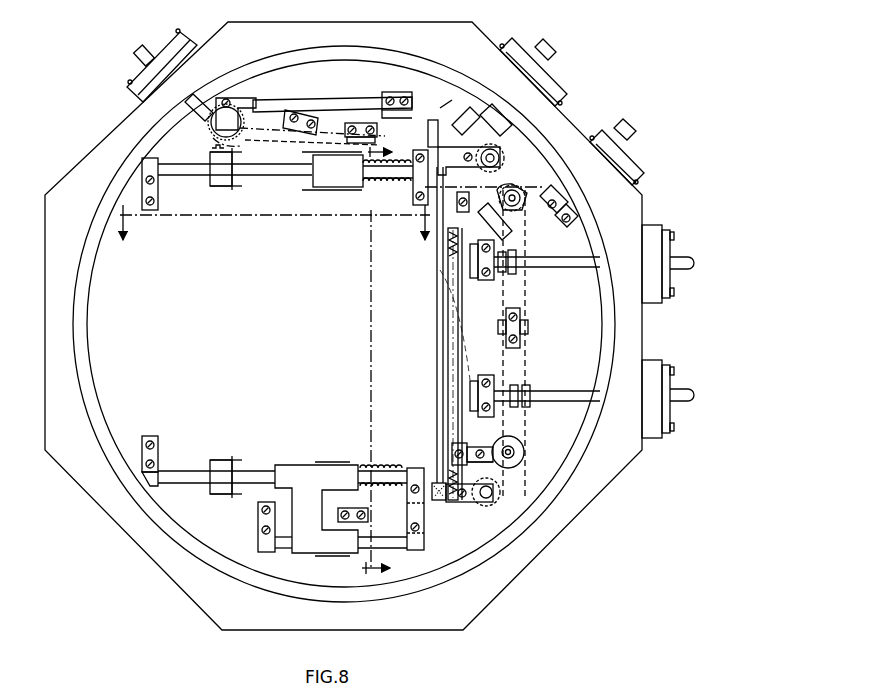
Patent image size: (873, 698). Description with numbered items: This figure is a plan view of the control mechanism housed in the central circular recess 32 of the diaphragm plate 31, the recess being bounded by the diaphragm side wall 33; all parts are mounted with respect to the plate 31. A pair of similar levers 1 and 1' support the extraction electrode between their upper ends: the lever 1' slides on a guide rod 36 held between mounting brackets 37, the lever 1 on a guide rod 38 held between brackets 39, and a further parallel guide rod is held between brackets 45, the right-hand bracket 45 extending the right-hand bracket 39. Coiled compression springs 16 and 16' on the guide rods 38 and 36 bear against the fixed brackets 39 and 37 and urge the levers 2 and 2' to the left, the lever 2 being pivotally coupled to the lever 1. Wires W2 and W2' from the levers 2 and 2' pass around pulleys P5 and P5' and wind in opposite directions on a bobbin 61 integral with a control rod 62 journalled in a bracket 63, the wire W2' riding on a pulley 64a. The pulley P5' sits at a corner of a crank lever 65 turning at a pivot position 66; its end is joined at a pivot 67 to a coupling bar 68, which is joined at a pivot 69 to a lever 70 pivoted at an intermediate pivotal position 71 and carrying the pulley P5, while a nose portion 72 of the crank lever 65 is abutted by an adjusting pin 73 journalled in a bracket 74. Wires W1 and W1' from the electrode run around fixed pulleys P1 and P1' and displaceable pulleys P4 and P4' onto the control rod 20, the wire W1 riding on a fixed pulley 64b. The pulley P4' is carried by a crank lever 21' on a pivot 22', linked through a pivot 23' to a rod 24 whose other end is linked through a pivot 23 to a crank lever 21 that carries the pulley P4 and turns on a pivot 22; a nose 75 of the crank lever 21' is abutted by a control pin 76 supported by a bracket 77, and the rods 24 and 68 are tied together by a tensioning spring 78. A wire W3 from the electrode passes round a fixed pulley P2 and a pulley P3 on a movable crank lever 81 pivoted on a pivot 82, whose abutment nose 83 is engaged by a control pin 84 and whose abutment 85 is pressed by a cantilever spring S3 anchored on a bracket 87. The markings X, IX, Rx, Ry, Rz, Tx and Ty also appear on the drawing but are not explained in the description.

The diaphragm plate 31 is at (147, 554).
The central circular recess 32 is at (260, 333).
The diaphragm side wall 33 is at (82, 287).
The guide rod 36 is at (190, 177).
The mounting bracket 37 is at (151, 212).
The guide rod 38 is at (178, 471).
The bracket 39 is at (148, 436).
The bracket 45 is at (258, 528).
The lever 1 is at (233, 457).
The lever 1' is at (236, 197).
The lever 2 is at (316, 491).
The lever 2' is at (332, 201).
The coiled compression spring 16 is at (382, 454).
The coiled compression spring 16' is at (388, 365).
The control rod 20 is at (676, 258).
The crank lever 21 is at (498, 510).
The crank lever 21' is at (483, 140).
The pivot 22 is at (469, 510).
The pivot 22' is at (469, 168).
The pivot 23 is at (444, 509).
The pivot 23' is at (429, 117).
The rod 24 is at (437, 298).
The bobbin 61 is at (530, 405).
The control rod 62 is at (570, 392).
The bracket 63 is at (470, 390).
The pulley 64a is at (528, 323).
The fixed pulley 64b is at (512, 348).
The crank lever 65 is at (484, 247).
The pivot position 66 is at (496, 195).
The pivot 67 is at (474, 201).
The coupling bar 68 is at (462, 312).
The pivot 69 is at (468, 442).
The lever 70 is at (495, 448).
The intermediate pivotal position 71 is at (482, 464).
The nose portion 72 is at (510, 236).
The adjusting pin 73 is at (630, 130).
The bracket 74 is at (572, 222).
The nose 75 is at (458, 120).
The control pin 76 is at (552, 50).
The bracket 77 is at (442, 106).
The tensioning spring 78 is at (448, 338).
The crank lever 81 is at (243, 98).
The pivot 82 is at (226, 99).
The abutment nose 83 is at (212, 128).
The control pin 84 is at (138, 48).
The abutment 85 is at (262, 100).
The bracket 87 is at (386, 98).
The fixed pulley P1 is at (347, 506).
The fixed pulley P1' is at (379, 131).
The pulley P2 is at (314, 122).
The pulley P3 is at (212, 146).
The displaceable pulley P4 is at (506, 490).
The displaceable pulley P4' is at (517, 141).
The pulley P5 is at (529, 452).
The pulley P5' is at (543, 180).
The wire W1 is at (441, 399).
The wire W1' is at (426, 130).
The wire W2 is at (445, 345).
The wire W2' is at (460, 345).
The wire W3 is at (270, 126).
The biasing cantilever spring S3 is at (318, 106).
The axis X is at (384, 360).
The section line IX is at (272, 233).
The sensor Rx is at (646, 163).
The sensor Ry is at (568, 80).
The sensor Rz is at (130, 86).
The transducer Tx is at (675, 266).
The transducer Ty is at (677, 418).